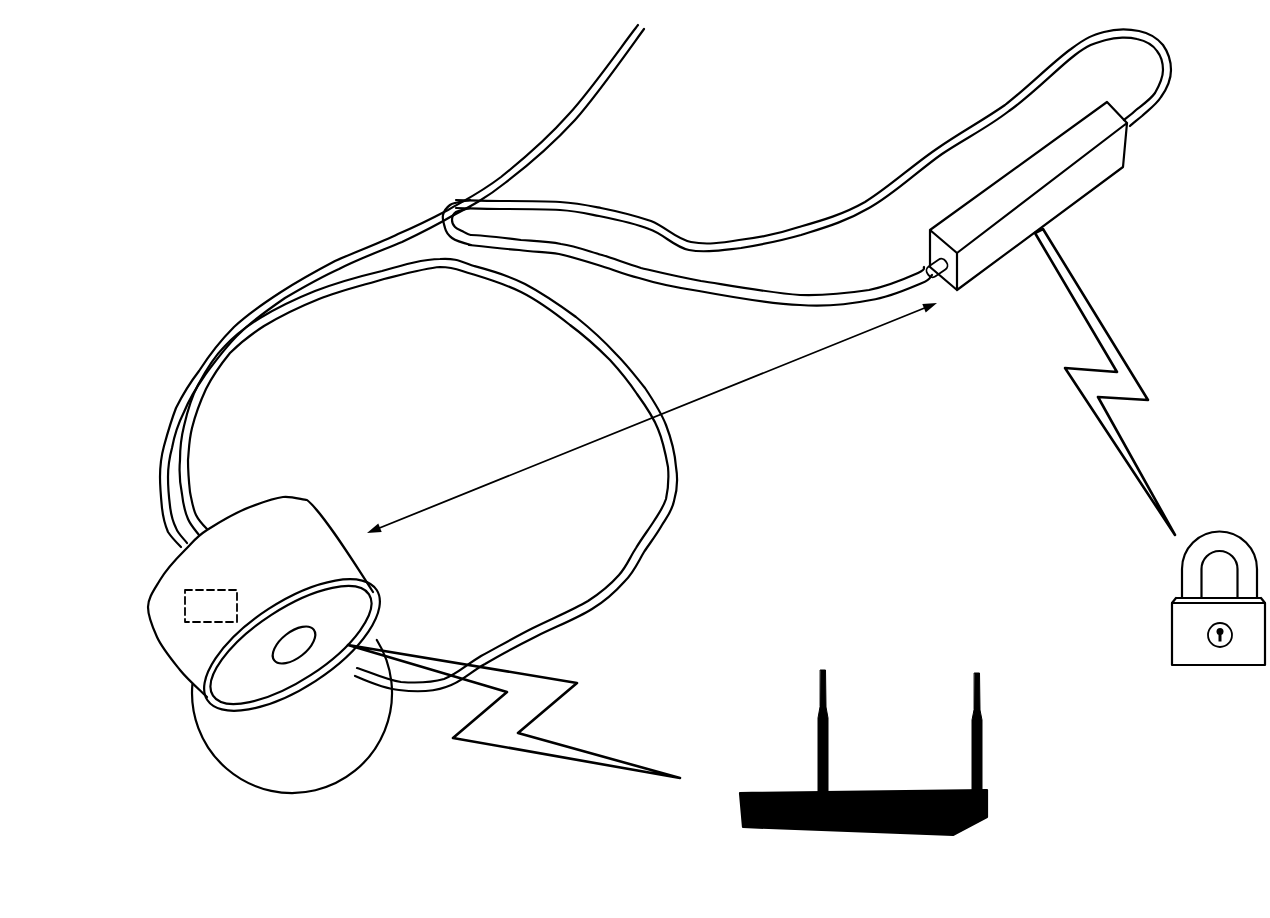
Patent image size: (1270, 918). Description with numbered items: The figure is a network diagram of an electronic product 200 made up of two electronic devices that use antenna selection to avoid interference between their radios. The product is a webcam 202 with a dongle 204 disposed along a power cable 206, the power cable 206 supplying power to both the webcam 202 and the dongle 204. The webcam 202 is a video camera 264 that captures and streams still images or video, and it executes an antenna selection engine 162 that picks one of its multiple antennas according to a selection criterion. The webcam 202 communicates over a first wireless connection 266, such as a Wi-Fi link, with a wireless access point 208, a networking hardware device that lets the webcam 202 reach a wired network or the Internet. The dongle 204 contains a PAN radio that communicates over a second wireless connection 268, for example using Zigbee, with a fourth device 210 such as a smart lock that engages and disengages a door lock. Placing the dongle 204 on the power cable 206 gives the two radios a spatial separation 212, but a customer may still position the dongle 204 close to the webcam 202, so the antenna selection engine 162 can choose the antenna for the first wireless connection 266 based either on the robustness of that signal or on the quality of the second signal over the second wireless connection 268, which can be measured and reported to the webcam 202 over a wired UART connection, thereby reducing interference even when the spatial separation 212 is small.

The electronic product 200 is at (226, 126).
The webcam 202 is at (281, 587).
The dongle 204 is at (984, 232).
The power cable 206 is at (573, 118).
The wireless access point 208 is at (777, 790).
The fourth device 210 is at (1172, 608).
The spatial separation 212 is at (776, 368).
The antenna selection engine 162 is at (230, 615).
The video camera 264 is at (287, 652).
The first wireless connection 266 is at (602, 763).
The second wireless connection 268 is at (1082, 394).